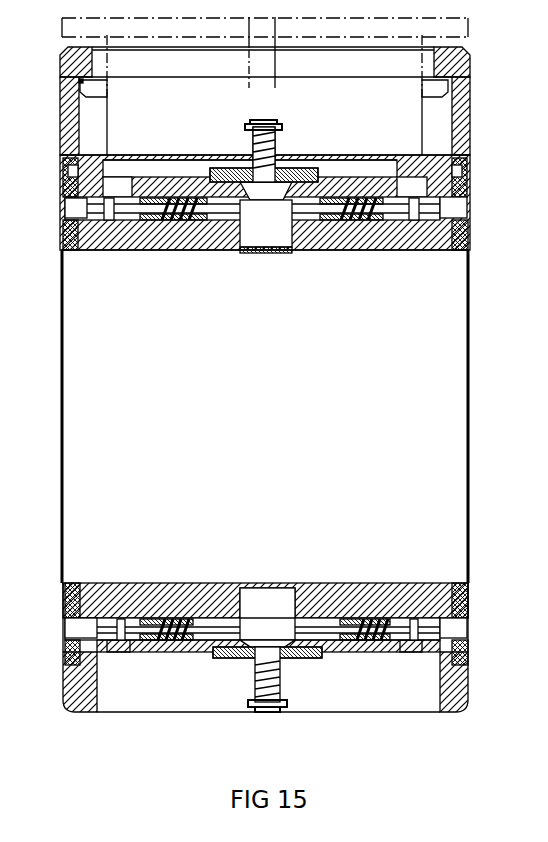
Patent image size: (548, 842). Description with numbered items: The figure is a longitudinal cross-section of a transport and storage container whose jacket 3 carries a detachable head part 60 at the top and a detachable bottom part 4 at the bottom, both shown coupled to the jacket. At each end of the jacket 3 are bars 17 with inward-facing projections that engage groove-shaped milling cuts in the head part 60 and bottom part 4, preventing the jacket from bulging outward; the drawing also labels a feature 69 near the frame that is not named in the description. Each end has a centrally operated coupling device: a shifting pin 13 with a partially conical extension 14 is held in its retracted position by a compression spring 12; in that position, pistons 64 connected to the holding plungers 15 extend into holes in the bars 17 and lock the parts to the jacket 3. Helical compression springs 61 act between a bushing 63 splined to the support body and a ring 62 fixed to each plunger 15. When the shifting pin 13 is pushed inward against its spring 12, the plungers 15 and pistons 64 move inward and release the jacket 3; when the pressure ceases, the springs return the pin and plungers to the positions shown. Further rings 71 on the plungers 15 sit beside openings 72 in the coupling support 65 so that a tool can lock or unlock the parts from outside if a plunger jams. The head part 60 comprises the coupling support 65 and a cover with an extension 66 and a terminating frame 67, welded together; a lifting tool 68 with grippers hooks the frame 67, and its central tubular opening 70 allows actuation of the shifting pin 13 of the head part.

The jacket 3 is at (62, 388).
The bottom part 4 is at (462, 688).
The compression spring 12 is at (278, 142).
The shifting pin 13 is at (253, 134).
The partially conical extension 14 is at (268, 216).
The holding plunger 15 is at (212, 618).
The bar 17 is at (62, 239).
The head part 60 is at (203, 131).
The helical compression spring 61 is at (351, 226).
The ring 62 is at (196, 226).
The bushing 63 is at (146, 222).
The piston 64 is at (72, 209).
The coupling support 65 is at (395, 245).
The extension 66 is at (62, 114).
The terminating frame 67 is at (70, 58).
The lifting tool 68 is at (62, 31).
The groove 69 is at (98, 87).
The tubular opening 70 is at (268, 62).
The ring 71 is at (111, 220).
The opening 72 is at (118, 186).